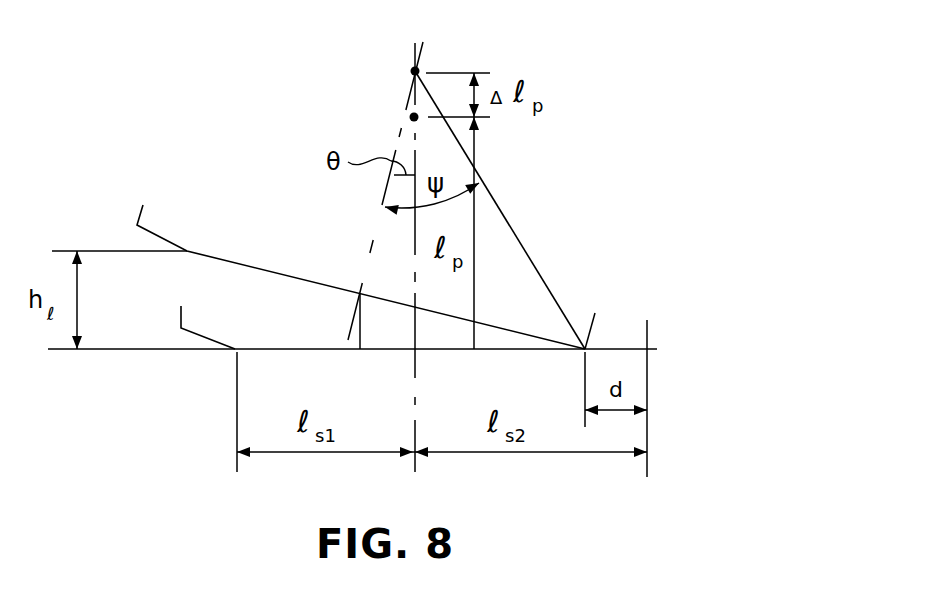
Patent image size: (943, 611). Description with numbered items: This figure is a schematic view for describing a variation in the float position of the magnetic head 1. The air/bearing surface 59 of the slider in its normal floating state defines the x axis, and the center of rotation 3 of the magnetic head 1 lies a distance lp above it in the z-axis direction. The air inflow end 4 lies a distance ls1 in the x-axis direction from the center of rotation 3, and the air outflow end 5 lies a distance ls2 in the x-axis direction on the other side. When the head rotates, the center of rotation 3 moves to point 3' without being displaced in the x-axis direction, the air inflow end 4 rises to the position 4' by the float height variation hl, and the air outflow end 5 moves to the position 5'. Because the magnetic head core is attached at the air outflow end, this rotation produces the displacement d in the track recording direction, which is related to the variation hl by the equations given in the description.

The displaced center of rotation point 3' is at (388, 44).
The center of rotation 3 is at (382, 92).
The displaced air inflow end 4' is at (354, 277).
The air inflow end 4 is at (200, 354).
The air/bearing surface 59 is at (318, 352).
The displaced air outflow end 5' is at (556, 355).
The air outflow end 5 is at (649, 365).
The magnetic head 1 is at (617, 340).